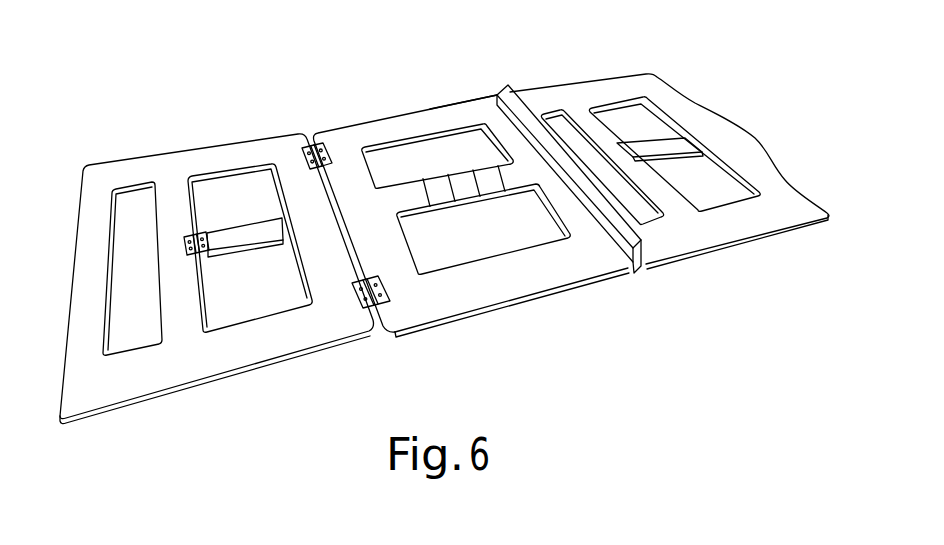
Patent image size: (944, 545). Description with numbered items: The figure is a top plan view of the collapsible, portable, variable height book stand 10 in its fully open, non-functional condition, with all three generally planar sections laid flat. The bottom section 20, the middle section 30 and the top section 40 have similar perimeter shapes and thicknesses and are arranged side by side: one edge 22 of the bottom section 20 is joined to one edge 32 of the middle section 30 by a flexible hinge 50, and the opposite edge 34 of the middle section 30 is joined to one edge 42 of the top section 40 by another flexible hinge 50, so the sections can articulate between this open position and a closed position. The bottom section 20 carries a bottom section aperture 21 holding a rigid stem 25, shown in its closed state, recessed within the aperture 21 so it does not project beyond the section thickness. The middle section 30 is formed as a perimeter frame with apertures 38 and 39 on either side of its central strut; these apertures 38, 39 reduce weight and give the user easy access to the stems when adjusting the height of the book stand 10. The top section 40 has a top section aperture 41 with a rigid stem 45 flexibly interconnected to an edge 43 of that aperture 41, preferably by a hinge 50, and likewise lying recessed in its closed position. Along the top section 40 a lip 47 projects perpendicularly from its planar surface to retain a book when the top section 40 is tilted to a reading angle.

The book stand 10 is at (520, 371).
The bottom section 20 is at (133, 183).
The bottom section aperture 21 is at (254, 300).
The edge of the bottom section 22 is at (308, 144).
The rigid stem 25 is at (223, 236).
The middle section 30 is at (404, 120).
The edge of the middle section 32 is at (318, 145).
The opposite edge of the middle section 34 is at (494, 98).
The aperture 38 is at (450, 174).
The aperture 39 is at (483, 247).
The top section 40 is at (558, 102).
The top section aperture 41 is at (655, 139).
The edge of the top section 42 is at (498, 87).
The edge of the top section aperture 43 is at (620, 144).
The rigid stem 45 is at (665, 150).
The lip 47 is at (647, 248).
The flexible hinge 50 is at (309, 232).